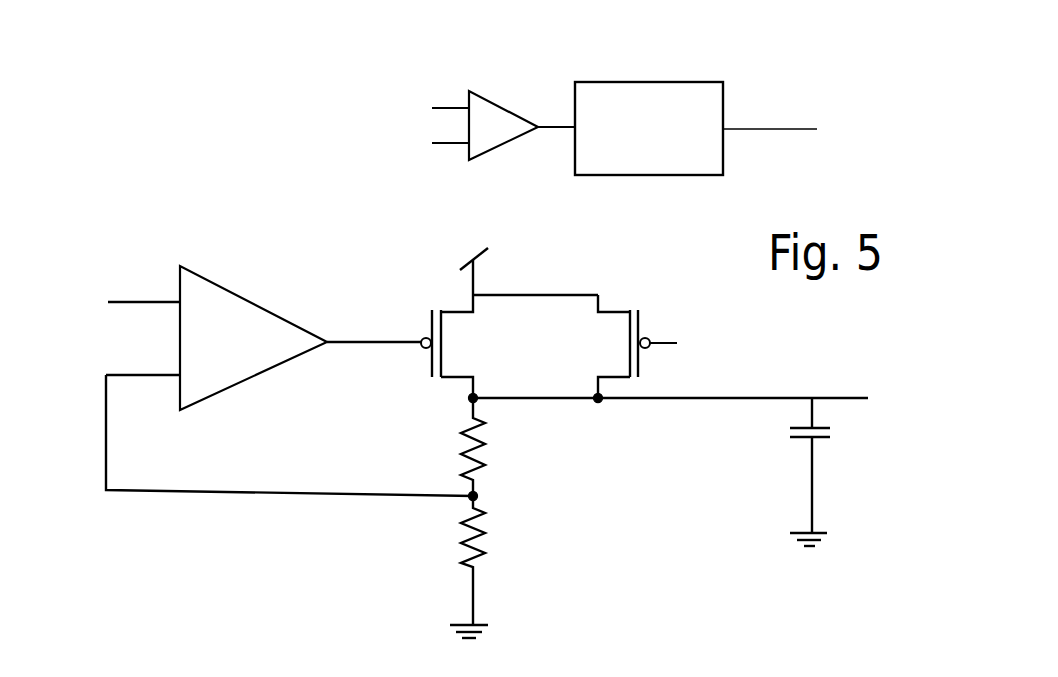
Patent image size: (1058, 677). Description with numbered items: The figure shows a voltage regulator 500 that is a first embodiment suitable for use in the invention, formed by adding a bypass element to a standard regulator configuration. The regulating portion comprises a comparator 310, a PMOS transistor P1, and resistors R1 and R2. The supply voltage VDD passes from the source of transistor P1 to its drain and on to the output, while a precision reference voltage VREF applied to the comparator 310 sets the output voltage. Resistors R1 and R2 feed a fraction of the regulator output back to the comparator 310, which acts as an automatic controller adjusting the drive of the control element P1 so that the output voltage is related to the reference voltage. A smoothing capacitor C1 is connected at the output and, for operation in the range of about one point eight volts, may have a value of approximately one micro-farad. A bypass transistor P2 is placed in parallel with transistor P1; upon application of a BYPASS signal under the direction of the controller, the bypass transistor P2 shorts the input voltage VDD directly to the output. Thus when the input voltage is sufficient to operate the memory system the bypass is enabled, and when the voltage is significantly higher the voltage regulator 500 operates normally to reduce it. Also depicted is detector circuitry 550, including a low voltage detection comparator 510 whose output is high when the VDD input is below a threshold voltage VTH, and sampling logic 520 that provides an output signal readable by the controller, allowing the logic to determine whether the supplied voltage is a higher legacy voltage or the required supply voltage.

The voltage regulator 500 is at (228, 161).
The comparator 310 is at (245, 315).
The low voltage detection comparator 510 is at (497, 98).
The sampling logic 520 is at (615, 163).
The detector circuitry 550 is at (762, 80).
The PMOS transistor P1 is at (455, 342).
The bypass transistor P2 is at (610, 350).
The resistor R1 is at (490, 442).
The resistor R2 is at (490, 534).
The smoothing capacitor C1 is at (845, 437).